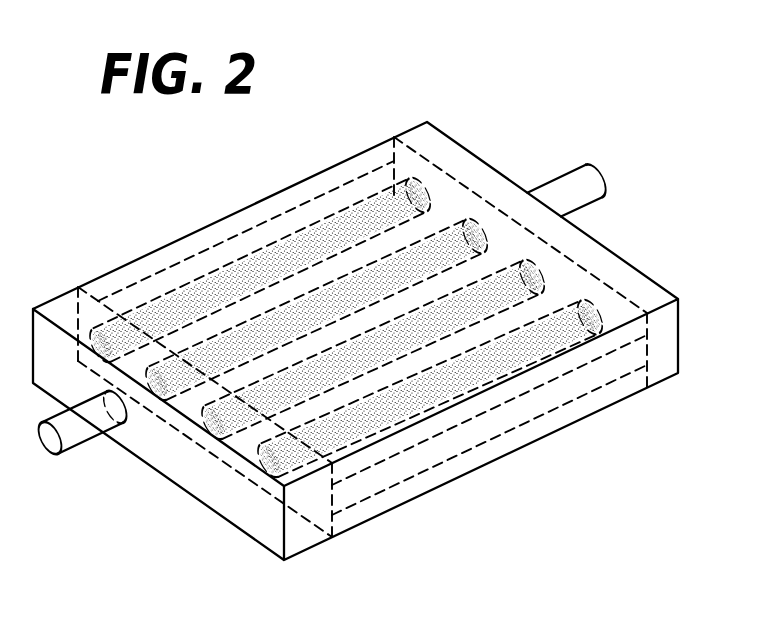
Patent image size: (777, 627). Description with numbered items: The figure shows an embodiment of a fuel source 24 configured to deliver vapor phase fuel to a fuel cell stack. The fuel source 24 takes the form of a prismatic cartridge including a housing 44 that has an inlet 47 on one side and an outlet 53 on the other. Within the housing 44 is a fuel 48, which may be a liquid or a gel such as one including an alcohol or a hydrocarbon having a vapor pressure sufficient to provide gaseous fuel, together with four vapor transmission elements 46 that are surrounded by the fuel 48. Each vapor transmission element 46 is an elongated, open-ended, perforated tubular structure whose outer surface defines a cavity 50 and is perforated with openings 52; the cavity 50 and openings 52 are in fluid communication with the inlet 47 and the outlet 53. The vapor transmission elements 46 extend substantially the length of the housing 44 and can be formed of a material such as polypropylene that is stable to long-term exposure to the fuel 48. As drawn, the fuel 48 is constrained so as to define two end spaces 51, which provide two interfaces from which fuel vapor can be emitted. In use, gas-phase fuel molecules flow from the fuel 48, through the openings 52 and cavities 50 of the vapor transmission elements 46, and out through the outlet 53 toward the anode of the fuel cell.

The fuel source 24 is at (488, 82).
The housing 44 is at (98, 264).
The vapor transmission elements 46 is at (268, 244).
The inlet 47 is at (81, 444).
The fuel 48 is at (574, 388).
The cavity 50 is at (264, 466).
The end spaces 51 is at (664, 351).
The openings 52 is at (207, 296).
The outlet 53 is at (567, 173).